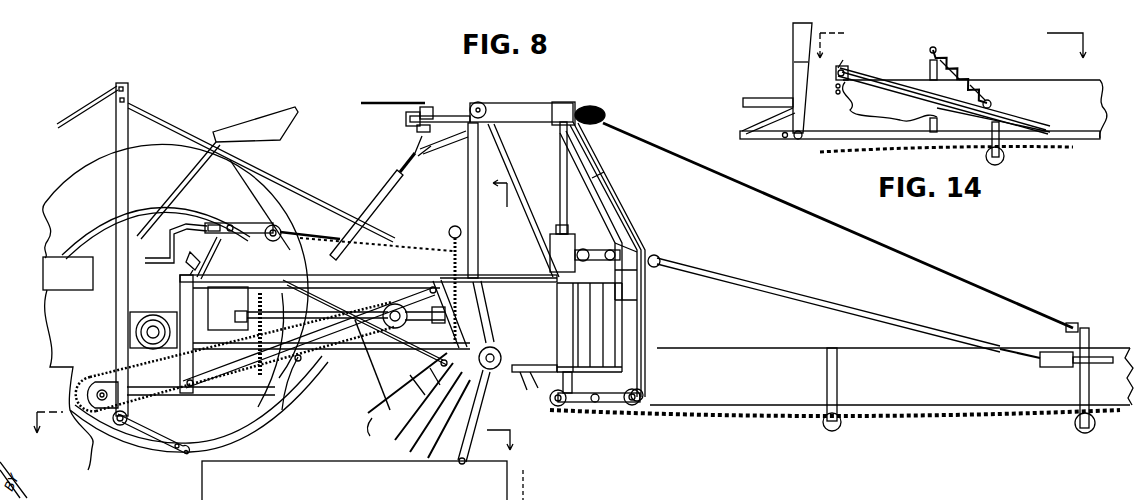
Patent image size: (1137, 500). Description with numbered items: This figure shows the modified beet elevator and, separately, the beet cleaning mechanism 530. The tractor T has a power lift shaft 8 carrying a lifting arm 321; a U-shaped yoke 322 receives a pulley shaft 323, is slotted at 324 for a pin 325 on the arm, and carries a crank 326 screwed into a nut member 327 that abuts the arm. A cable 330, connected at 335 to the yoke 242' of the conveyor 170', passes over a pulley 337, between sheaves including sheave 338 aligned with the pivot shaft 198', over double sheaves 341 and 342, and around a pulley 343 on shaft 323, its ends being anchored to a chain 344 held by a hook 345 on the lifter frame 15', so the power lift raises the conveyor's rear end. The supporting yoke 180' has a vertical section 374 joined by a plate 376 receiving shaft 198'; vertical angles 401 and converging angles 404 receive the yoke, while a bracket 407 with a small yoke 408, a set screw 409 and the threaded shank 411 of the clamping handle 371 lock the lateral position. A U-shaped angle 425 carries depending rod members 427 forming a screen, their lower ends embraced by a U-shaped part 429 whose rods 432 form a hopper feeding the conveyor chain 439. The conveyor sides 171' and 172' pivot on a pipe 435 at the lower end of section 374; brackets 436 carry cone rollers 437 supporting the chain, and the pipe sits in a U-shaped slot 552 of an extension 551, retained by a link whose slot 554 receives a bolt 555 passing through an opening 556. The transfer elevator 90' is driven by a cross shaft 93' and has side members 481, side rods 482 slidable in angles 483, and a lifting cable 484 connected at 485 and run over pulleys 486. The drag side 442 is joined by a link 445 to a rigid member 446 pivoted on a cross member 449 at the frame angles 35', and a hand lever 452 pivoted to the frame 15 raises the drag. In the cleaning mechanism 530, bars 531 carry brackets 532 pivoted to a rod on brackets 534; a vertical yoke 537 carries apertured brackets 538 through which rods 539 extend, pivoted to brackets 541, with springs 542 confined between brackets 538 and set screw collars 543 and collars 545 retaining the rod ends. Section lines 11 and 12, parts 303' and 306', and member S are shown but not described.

In FIG. 8, the power lift shaft 8 is at (190, 252).
In FIG. 8, the section line 11 is at (282, 438).
In FIG. 8, the section line 12 is at (518, 340).
In FIG. 14, the frame 15 is at (958, 56).
In FIG. 8, the beet lifter frame 15' is at (342, 324).
In FIG. 8, the frame angles 35' is at (226, 249).
In FIG. 8, the transfer elevator 90' is at (461, 417).
In FIG. 8, the cross shaft 93' is at (492, 374).
In FIG. 8, the conveyor 170' is at (891, 354).
In FIG. 8, the conveyor side 171' is at (842, 377).
In FIG. 14, the conveyor side 171' is at (946, 148).
In FIG. 14, the conveyor side 172' is at (975, 89).
In FIG. 8, the conveyor supporting yoke 180' is at (626, 260).
In FIG. 8, the pivot shaft 198' is at (543, 178).
In FIG. 8, the yoke 242' is at (1098, 367).
In FIG. 8, the drive rod 303' is at (844, 306).
In FIG. 8, the coupling 306' is at (1083, 347).
In FIG. 8, the lifting arm 321 is at (259, 332).
In FIG. 8, the U-shaped yoke 322 is at (270, 195).
In FIG. 8, the pulley shaft 323 is at (276, 225).
In FIG. 8, the slot 324 is at (243, 222).
In FIG. 8, the pin 325 is at (228, 225).
In FIG. 8, the crank 326 is at (158, 222).
In FIG. 8, the nut member 327 is at (208, 223).
In FIG. 8, the cable 330 is at (698, 154).
In FIG. 8, the cable connection 335 is at (1072, 323).
In FIG. 8, the pulley 337 is at (603, 118).
In FIG. 8, the sheave 338 is at (572, 95).
In FIG. 8, the double sheave 341 is at (478, 102).
In FIG. 8, the second double sheave 342 is at (452, 232).
In FIG. 8, the pulley 343 is at (284, 230).
In FIG. 8, the chain 344 is at (388, 247).
In FIG. 8, the hook 345 is at (480, 275).
In FIG. 8, the clamping member 371 is at (382, 101).
In FIG. 8, the vertical yoke section 374 is at (646, 310).
In FIG. 14, the vertical yoke section 374 is at (793, 33).
In FIG. 8, the plate 376 is at (552, 128).
In FIG. 8, the vertical angles 401 is at (485, 164).
In FIG. 8, the converging angles 404 is at (510, 284).
In FIG. 8, the bracket 407 is at (438, 116).
In FIG. 8, the small yoke 408 is at (406, 118).
In FIG. 8, the set screw 409 is at (417, 129).
In FIG. 8, the threaded shank portion 411 is at (424, 107).
In FIG. 8, the U-shaped angle 425 is at (536, 284).
In FIG. 8, the depending U-shaped rod members 427 is at (606, 328).
In FIG. 8, the U-shaped part 429 is at (538, 365).
In FIG. 14, the U-shaped part 429 is at (760, 98).
In FIG. 8, the rods 432 is at (530, 390).
In FIG. 8, the pipe member 435 is at (644, 393).
In FIG. 14, the brackets 436 is at (752, 130).
In FIG. 8, the cone rollers 437 is at (555, 406).
In FIG. 8, the conveyor chain 439 is at (660, 414).
In FIG. 8, the drag side 442 is at (296, 461).
In FIG. 8, the link 445 is at (198, 440).
In FIG. 8, the laterally rigid member 446 is at (150, 446).
In FIG. 8, the cross member 449 is at (120, 428).
In FIG. 8, the hand lever 452 is at (372, 200).
In FIG. 8, the side members 481 is at (430, 430).
In FIG. 8, the rods 482 is at (408, 380).
In FIG. 8, the angle 483 is at (368, 402).
In FIG. 8, the lifting cable 484 is at (346, 358).
In FIG. 8, the cable connection 485 is at (370, 425).
In FIG. 8, the pulleys 486 is at (368, 292).
In FIG. 14, the beet cleaning mechanism 530 is at (885, 62).
In FIG. 14, the cleaner bars 531 is at (895, 90).
In FIG. 14, the apertured brackets 532 is at (855, 60).
In FIG. 14, the brackets 534 is at (843, 60).
In FIG. 14, the vertical yoke 537 is at (930, 66).
In FIG. 14, the upstanding apertured brackets 538 is at (950, 52).
In FIG. 14, the rods 539 is at (974, 84).
In FIG. 14, the brackets 541 is at (992, 103).
In FIG. 14, the spring 542 is at (955, 64).
In FIG. 14, the set screw collar 543 is at (955, 110).
In FIG. 14, the set screw collars 545 is at (932, 47).
In FIG. 14, the extension 551 is at (785, 140).
In FIG. 14, the U-shaped slot 552 is at (800, 140).
In FIG. 8, the slot 554 is at (632, 406).
In FIG. 8, the bolt 555 is at (594, 403).
In FIG. 14, the opening 556 is at (778, 138).
In FIG. 8, the deflector S is at (255, 126).
In FIG. 8, the tractor T is at (77, 252).